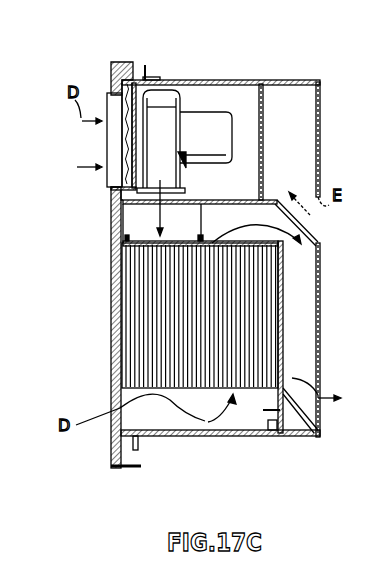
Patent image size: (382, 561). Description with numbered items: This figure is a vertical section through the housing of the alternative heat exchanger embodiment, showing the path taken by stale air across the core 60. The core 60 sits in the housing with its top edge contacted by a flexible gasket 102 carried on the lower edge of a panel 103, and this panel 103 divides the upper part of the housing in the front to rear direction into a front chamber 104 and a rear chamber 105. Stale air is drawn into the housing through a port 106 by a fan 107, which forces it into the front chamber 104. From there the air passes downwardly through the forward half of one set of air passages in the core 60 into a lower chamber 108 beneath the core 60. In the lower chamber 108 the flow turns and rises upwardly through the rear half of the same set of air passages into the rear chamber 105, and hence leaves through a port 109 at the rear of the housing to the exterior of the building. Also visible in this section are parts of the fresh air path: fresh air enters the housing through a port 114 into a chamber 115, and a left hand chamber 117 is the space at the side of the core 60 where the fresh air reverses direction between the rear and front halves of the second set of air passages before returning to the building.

The core 60 is at (157, 331).
The flexible gasket 102 is at (204, 240).
The panel 103 is at (125, 226).
The front chamber 104 is at (112, 234).
The rear chamber 105 is at (300, 249).
The port 106 is at (110, 146).
The fan 107 is at (160, 123).
The lower chamber 108 is at (250, 437).
The port 109 is at (320, 377).
The port 114 is at (320, 231).
The chamber 115 is at (290, 102).
The left hand chamber 117 is at (246, 265).